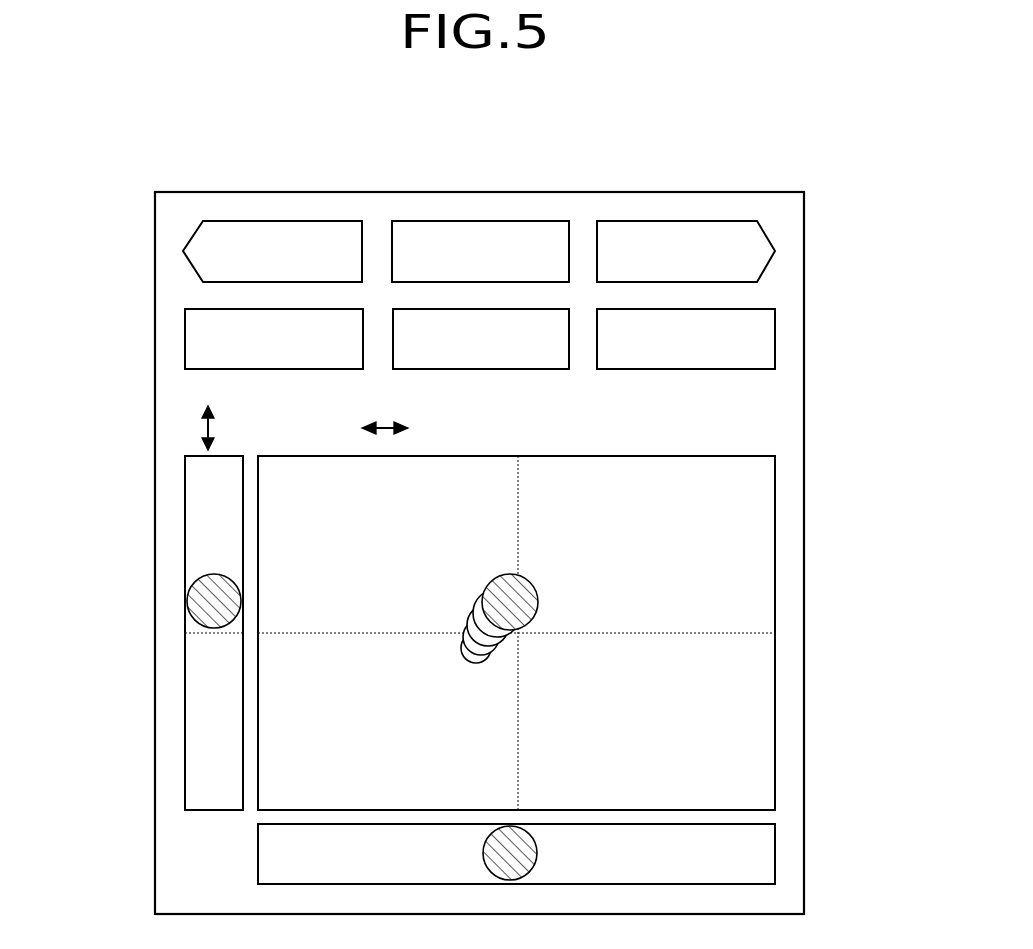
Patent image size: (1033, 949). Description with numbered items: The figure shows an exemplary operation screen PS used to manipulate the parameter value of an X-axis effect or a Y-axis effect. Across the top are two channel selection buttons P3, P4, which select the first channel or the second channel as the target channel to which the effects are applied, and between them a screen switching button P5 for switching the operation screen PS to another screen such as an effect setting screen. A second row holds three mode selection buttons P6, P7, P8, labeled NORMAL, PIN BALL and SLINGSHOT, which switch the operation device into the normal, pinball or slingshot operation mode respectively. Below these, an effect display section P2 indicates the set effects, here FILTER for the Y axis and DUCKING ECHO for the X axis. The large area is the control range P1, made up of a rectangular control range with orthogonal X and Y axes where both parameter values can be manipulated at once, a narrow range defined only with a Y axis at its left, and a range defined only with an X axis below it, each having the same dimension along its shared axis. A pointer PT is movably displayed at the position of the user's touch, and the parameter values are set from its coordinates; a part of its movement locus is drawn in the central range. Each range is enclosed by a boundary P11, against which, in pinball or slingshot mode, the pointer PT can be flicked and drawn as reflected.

The operation screen PS is at (775, 192).
The channel selection button P3 is at (247, 221).
The screen switching button P5 is at (510, 221).
The channel selection button P4 is at (716, 221).
The mode selection button P6 is at (185, 343).
The mode selection button P7 is at (525, 369).
The mode selection button P8 is at (775, 340).
The effect display section P2 is at (667, 428).
The control range P1 is at (775, 505).
The boundary P11 is at (775, 705).
The pointer PT is at (187, 603).